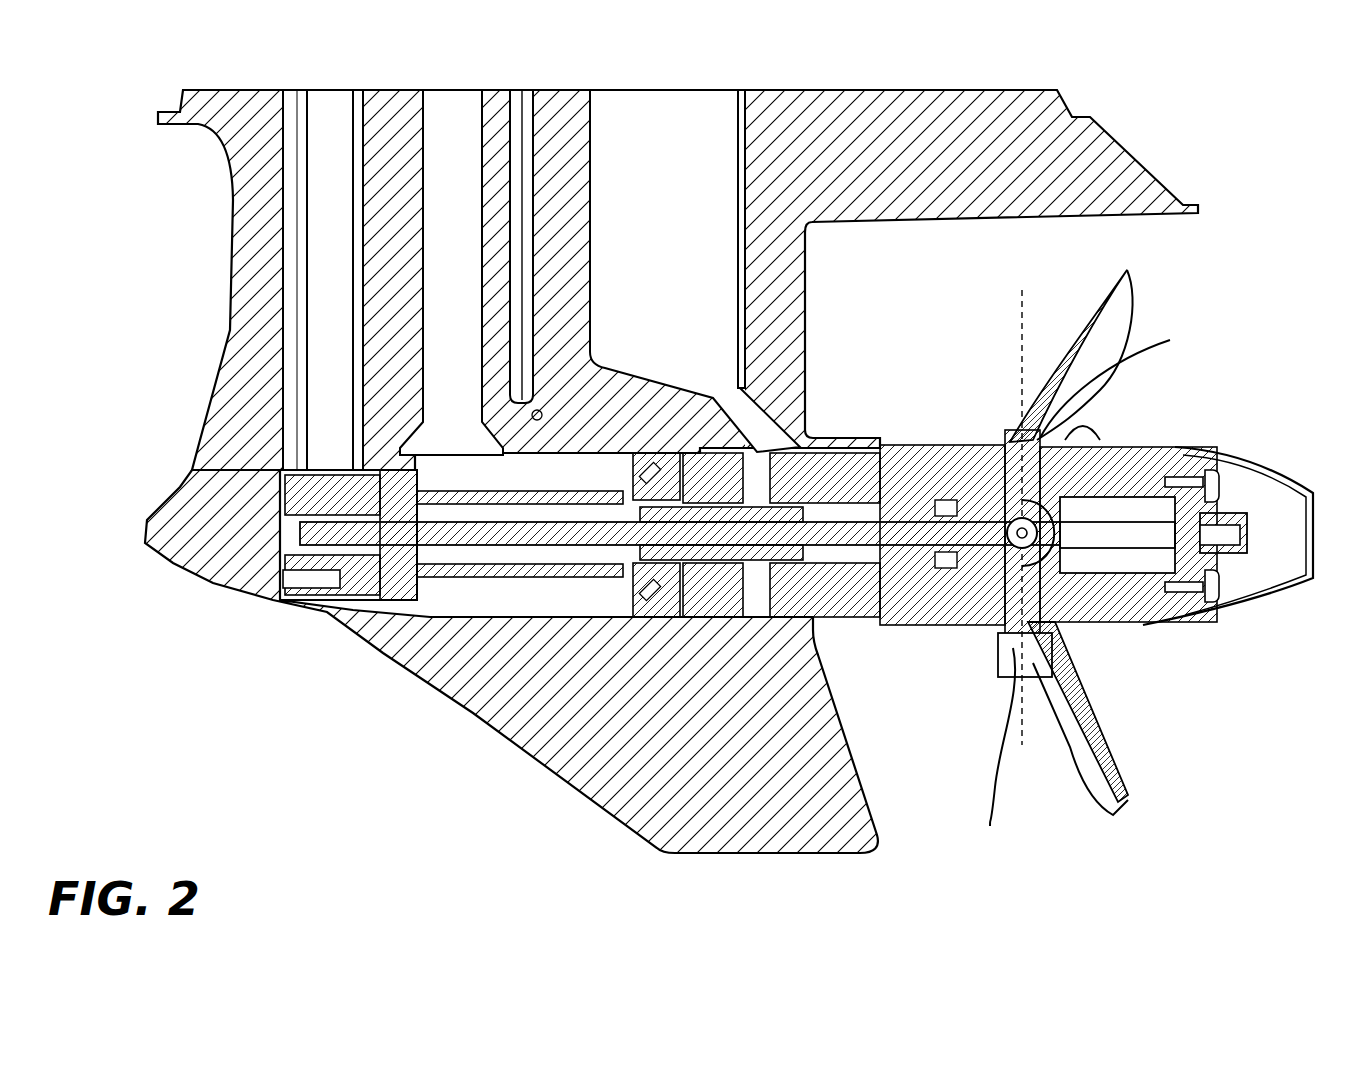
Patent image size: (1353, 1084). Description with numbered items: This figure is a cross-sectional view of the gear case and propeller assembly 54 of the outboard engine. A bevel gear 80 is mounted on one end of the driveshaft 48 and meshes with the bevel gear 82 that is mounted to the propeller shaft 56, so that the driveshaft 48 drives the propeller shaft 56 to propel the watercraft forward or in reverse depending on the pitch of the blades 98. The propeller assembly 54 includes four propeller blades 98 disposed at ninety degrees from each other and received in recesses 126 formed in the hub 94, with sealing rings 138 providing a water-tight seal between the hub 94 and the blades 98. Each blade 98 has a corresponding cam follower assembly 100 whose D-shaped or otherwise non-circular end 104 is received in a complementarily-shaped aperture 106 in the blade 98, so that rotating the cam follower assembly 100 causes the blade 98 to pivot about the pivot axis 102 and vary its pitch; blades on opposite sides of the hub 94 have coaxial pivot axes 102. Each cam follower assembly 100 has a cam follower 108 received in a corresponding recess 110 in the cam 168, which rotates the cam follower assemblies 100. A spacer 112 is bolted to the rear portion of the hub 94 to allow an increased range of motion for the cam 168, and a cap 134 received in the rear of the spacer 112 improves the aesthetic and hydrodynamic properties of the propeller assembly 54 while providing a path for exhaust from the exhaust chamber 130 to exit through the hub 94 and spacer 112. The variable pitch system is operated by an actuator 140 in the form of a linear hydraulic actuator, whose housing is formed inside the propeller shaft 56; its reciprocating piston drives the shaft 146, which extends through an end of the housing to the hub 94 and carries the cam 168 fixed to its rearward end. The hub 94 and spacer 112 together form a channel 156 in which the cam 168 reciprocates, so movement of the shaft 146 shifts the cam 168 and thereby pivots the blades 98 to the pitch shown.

The driveshaft 48 is at (452, 187).
The exhaust chamber 130 is at (682, 238).
The bevel gear 80 is at (433, 467).
The bevel gear 82 is at (397, 453).
The shaft 146 is at (817, 537).
The channel 156 is at (855, 440).
The hub 94 is at (922, 440).
The cam follower 108 is at (975, 440).
The propeller blade 98 is at (1050, 353).
The pivot axis 102 is at (1043, 550).
The non-circular end 104 is at (1067, 420).
The aperture 106 is at (1053, 430).
The recess 126 is at (1110, 450).
The sealing ring 138 is at (1085, 425).
The spacer 112 is at (1160, 445).
The cap 134 is at (1220, 617).
The cam follower assembly 100 is at (1053, 540).
The cam 168 is at (903, 547).
The recess 110 is at (950, 520).
The propeller shaft 56 is at (540, 633).
The actuator 140 is at (357, 690).
The propeller assembly 54 is at (800, 868).